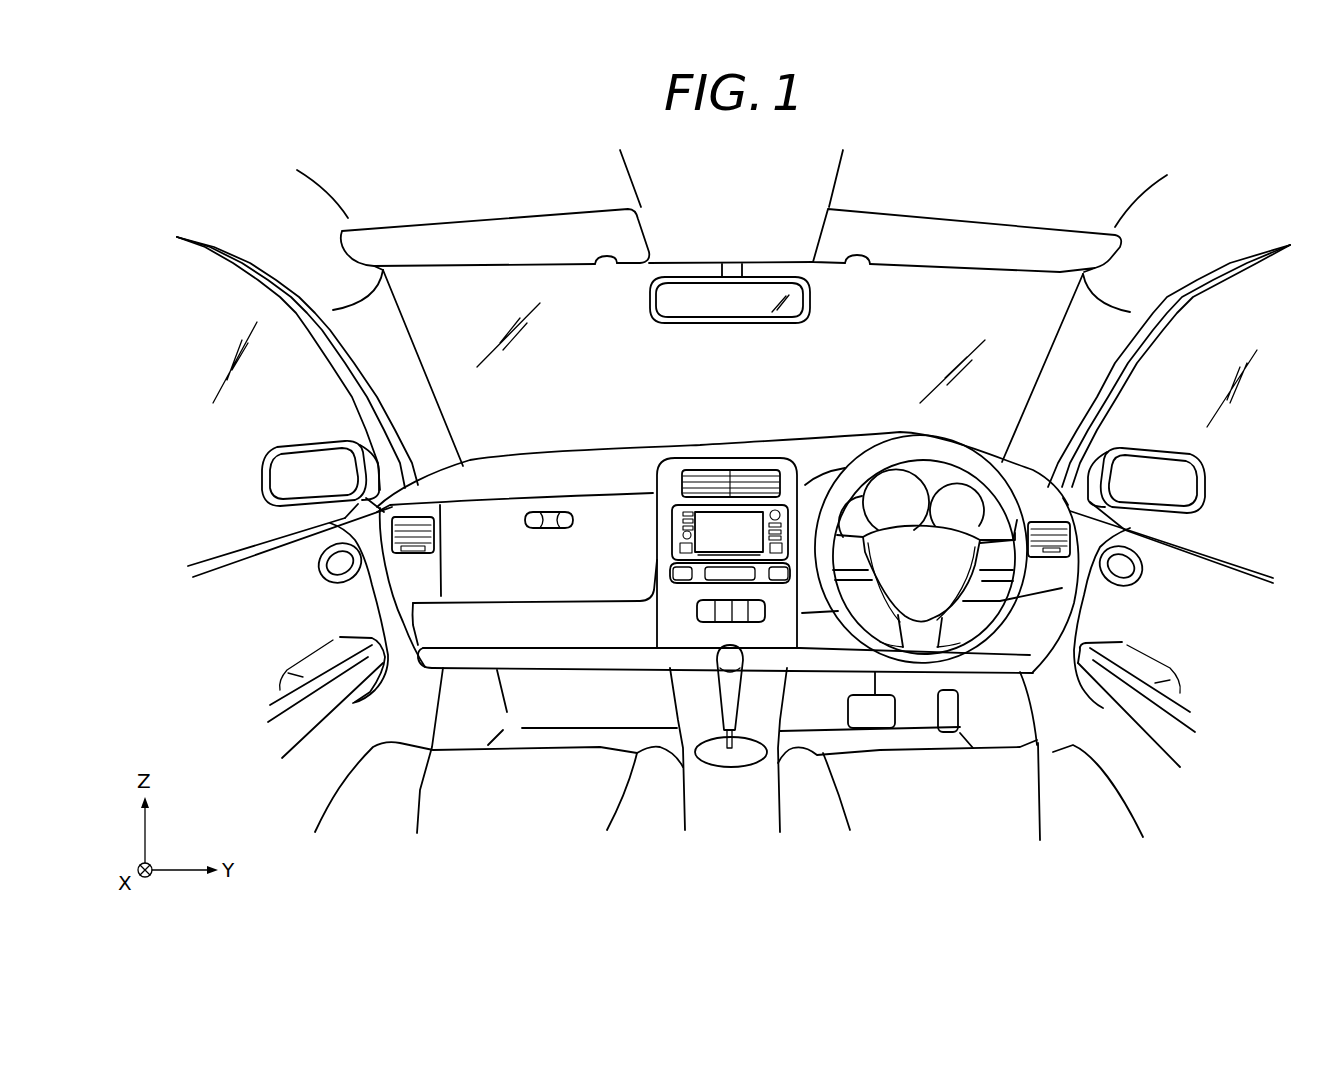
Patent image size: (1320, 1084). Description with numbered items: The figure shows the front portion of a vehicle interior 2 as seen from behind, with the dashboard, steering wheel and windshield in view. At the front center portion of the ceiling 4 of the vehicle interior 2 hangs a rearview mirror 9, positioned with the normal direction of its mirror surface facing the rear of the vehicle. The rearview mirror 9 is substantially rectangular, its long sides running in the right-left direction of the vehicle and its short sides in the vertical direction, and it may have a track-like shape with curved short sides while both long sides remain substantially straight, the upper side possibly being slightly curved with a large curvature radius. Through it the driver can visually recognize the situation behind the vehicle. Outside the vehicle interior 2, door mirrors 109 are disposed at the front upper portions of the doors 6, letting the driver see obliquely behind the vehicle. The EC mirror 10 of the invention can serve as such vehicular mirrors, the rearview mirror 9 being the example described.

The vehicle interior 2 is at (596, 713).
The ceiling 4 is at (739, 176).
The door 6 is at (241, 657).
The rearview mirror 9 is at (813, 305).
The EC mirror 10 is at (729, 300).
The door mirror 109 is at (260, 470).